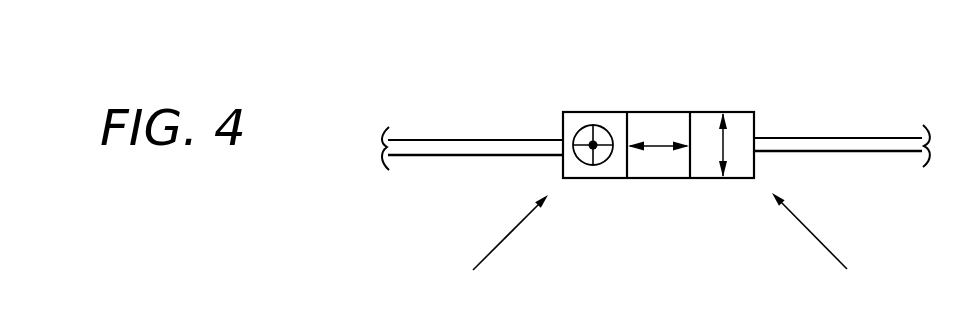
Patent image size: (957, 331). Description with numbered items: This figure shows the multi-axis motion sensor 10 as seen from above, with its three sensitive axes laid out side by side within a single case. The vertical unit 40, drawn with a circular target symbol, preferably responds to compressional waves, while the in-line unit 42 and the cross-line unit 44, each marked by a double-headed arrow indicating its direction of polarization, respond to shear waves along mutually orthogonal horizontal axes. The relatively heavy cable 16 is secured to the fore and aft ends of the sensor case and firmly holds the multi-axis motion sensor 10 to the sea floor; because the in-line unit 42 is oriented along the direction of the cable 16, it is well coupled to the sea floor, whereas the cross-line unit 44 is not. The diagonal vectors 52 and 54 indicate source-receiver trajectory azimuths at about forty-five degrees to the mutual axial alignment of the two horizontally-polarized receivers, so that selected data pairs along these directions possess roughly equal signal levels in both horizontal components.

The multi-axis motion sensor 10 is at (512, 79).
The cable 16 is at (791, 139).
The vertical unit 40 is at (578, 110).
The in-line unit 42 is at (658, 110).
The cross-line unit 44 is at (724, 110).
The vector 52 is at (508, 235).
The vector 54 is at (808, 232).